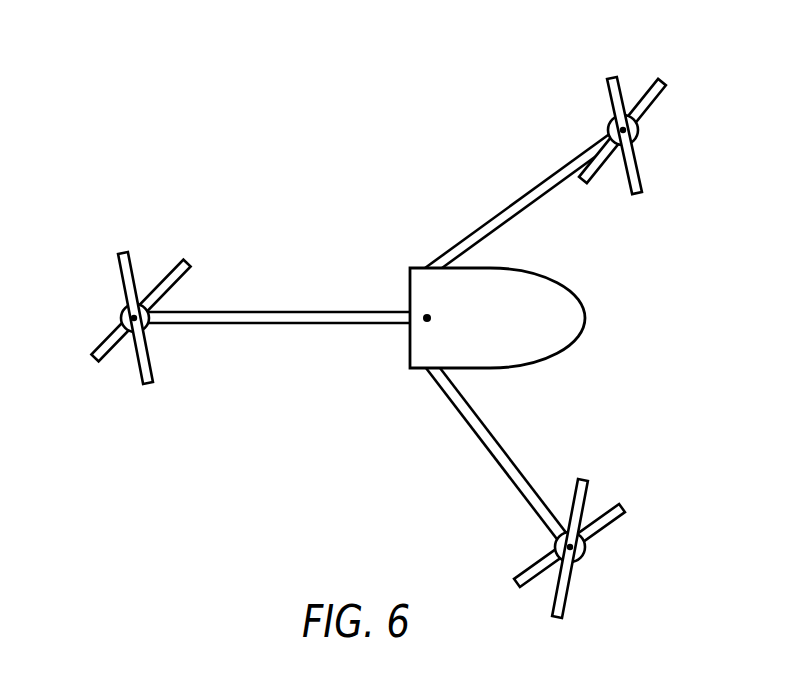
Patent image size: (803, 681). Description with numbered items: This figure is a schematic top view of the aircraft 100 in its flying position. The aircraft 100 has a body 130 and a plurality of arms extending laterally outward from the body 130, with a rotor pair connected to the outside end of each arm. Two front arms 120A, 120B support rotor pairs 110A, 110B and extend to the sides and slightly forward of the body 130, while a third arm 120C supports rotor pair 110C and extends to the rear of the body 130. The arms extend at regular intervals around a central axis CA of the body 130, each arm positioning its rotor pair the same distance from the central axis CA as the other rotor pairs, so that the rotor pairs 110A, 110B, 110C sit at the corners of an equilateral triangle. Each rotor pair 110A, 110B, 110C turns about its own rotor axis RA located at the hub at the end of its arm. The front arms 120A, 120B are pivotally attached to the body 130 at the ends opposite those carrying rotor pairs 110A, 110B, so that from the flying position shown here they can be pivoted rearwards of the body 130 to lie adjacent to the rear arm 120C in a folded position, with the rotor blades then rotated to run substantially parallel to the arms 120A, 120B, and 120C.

The aircraft 100 is at (369, 172).
The rotor pair 110A is at (640, 72).
The rotor pair 110B is at (617, 543).
The rotor pair 110C is at (118, 361).
The arm 120A is at (536, 182).
The arm 120B is at (498, 443).
The arm 120C is at (273, 312).
The body 130 is at (567, 313).
The central axis CA is at (427, 318).
The rotor axis RA is at (624, 130).